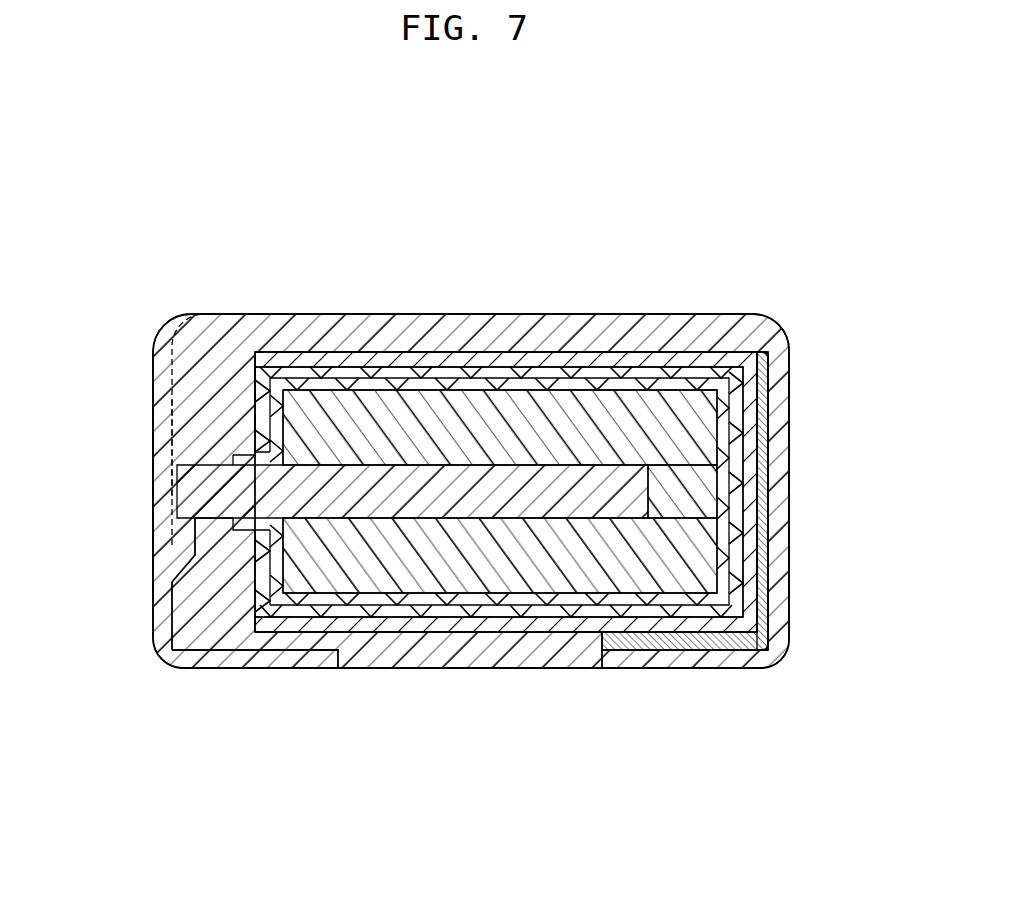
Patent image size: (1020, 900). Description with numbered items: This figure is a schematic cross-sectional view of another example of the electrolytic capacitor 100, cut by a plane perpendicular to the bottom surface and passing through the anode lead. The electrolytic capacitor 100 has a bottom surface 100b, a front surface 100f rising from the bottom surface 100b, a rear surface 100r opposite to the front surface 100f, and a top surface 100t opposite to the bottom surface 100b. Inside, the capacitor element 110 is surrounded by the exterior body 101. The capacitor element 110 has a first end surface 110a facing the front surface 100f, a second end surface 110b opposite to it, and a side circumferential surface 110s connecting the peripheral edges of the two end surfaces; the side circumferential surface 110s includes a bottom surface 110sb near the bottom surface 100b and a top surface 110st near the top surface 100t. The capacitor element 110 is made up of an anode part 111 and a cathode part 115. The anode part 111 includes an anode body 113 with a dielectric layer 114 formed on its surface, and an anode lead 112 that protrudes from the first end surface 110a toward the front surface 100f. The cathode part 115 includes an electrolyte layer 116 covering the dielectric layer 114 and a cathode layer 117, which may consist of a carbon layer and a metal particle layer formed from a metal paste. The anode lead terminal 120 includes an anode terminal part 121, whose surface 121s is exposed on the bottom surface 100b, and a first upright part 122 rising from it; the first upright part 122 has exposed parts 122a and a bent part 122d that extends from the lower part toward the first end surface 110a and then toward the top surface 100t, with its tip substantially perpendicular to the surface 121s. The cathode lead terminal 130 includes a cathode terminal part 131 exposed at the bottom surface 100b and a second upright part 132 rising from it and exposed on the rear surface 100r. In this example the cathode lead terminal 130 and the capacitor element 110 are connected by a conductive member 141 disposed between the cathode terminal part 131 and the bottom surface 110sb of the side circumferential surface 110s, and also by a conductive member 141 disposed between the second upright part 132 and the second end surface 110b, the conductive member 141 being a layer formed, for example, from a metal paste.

The electrolytic capacitor 100 is at (472, 515).
The top surface 100t is at (442, 314).
The bottom surface 100b is at (633, 668).
The front surface 100f is at (153, 440).
The rear surface 100r is at (789, 408).
The exterior body 101 is at (722, 320).
The capacitor element 110 is at (472, 533).
The first end surface 110a is at (255, 390).
The second end surface 110b is at (768, 357).
The side circumferential surface 110s is at (506, 586).
The bottom surface 110sb is at (597, 752).
The top surface 110st is at (505, 352).
The anode part 111 is at (447, 574).
The anode lead 112 is at (343, 505).
The anode body 113 is at (400, 575).
The dielectric layer 114 is at (440, 600).
The cathode part 115 is at (506, 555).
The electrolyte layer 116 is at (490, 612).
The cathode layer 117 is at (560, 625).
The anode lead terminal 120 is at (213, 525).
The anode terminal part 121 is at (255, 635).
The surface of anode terminal part 121s is at (255, 699).
The first upright part 122 is at (161, 509).
The exposed part 122a is at (196, 318).
The bent part 122d is at (177, 530).
The cathode lead terminal 130 is at (721, 568).
The cathode terminal part 131 is at (681, 706).
The second upright part 132 is at (789, 623).
The conductive member 141 is at (667, 650).